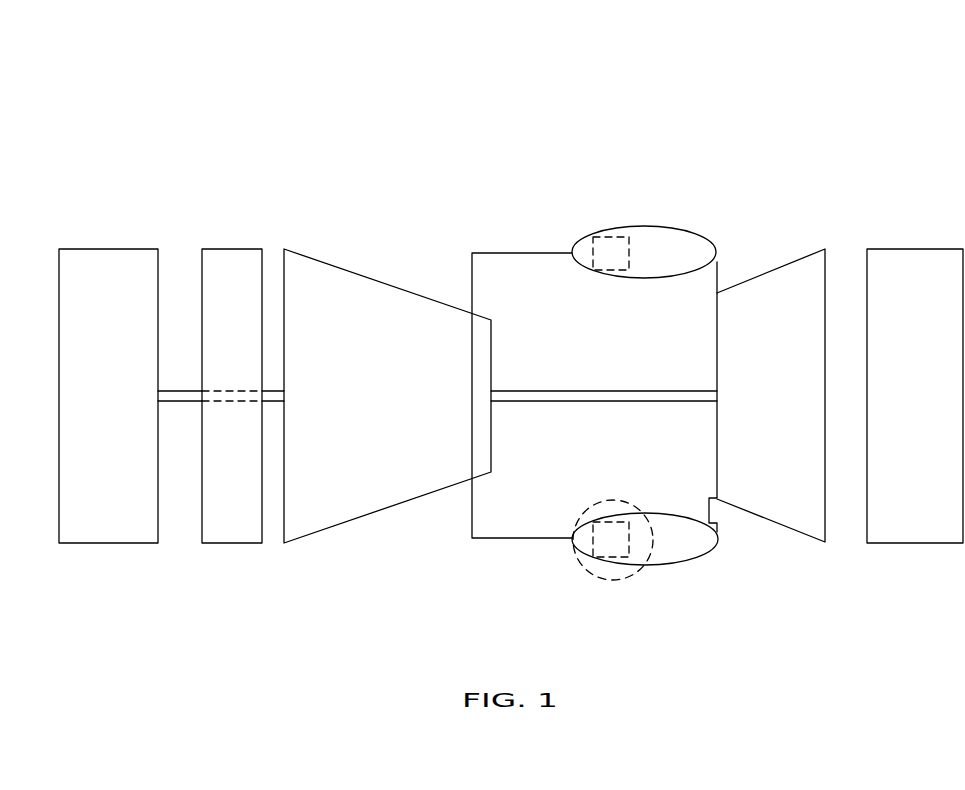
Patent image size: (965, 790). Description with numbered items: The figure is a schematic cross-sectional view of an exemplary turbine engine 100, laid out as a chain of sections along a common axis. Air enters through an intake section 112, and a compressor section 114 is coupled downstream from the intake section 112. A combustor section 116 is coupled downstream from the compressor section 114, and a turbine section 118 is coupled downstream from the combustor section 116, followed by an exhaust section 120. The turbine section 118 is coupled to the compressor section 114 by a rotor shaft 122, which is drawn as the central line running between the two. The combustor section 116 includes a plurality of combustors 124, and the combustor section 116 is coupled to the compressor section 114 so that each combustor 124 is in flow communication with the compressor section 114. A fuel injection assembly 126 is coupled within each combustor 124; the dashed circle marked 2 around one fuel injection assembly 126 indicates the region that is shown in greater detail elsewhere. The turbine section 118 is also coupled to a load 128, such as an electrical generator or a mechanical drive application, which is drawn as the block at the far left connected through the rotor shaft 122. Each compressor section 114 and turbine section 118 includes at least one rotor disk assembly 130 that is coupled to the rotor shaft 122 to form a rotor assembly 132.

The turbine engine 100 is at (254, 106).
The intake section 112 is at (233, 249).
The compressor section 114 is at (352, 522).
The combustor section 116 is at (697, 214).
The turbine section 118 is at (814, 249).
The exhaust section 120 is at (916, 249).
The rotor shaft 122 is at (622, 391).
The combustor 124 is at (662, 227).
The fuel injection assembly 126 is at (617, 228).
The load 128 is at (110, 249).
The rotor disk assembly 130 is at (869, 181).
The rotor assembly 132 is at (794, 550).
The detail region of FIG. 2 is at (573, 560).